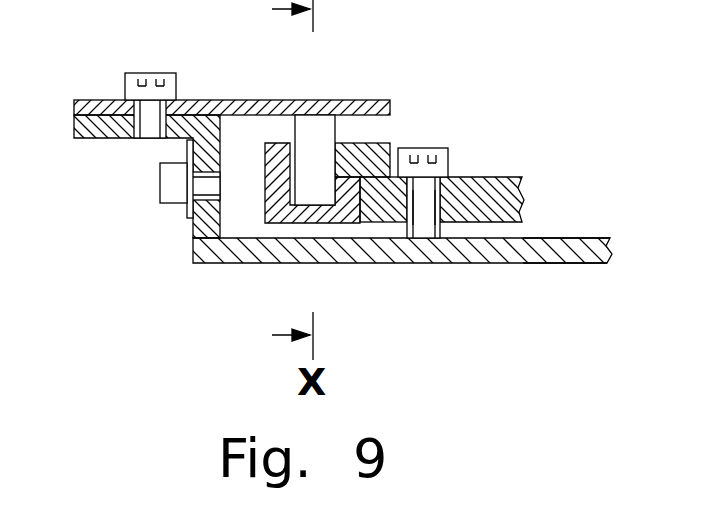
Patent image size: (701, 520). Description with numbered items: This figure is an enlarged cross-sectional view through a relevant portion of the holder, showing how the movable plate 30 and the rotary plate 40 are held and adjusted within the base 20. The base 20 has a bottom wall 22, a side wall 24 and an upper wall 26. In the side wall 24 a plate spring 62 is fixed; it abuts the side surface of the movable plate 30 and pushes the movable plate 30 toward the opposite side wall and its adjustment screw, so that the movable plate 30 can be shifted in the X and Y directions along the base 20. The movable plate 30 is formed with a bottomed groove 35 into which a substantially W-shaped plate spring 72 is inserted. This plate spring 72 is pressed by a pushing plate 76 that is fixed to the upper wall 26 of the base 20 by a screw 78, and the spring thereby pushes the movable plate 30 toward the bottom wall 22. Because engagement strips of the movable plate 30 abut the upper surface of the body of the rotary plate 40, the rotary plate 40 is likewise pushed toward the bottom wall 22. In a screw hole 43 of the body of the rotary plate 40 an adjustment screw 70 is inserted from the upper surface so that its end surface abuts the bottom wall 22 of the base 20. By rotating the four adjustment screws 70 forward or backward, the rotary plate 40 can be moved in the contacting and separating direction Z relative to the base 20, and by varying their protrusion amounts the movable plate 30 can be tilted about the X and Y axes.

The base 20 is at (412, 263).
The bottom wall 22 is at (545, 248).
The side wall 24 is at (202, 240).
The upper wall 26 is at (97, 128).
The movable plate 30 is at (397, 146).
The bottomed groove 35 is at (290, 168).
The rotary plate 40 is at (498, 177).
The screw hole 43 is at (429, 193).
The plate spring 62 is at (188, 208).
The adjustment screw 70 is at (452, 152).
The plate spring 72 is at (318, 132).
The pushing plate 76 is at (386, 100).
The screw 78 is at (130, 73).